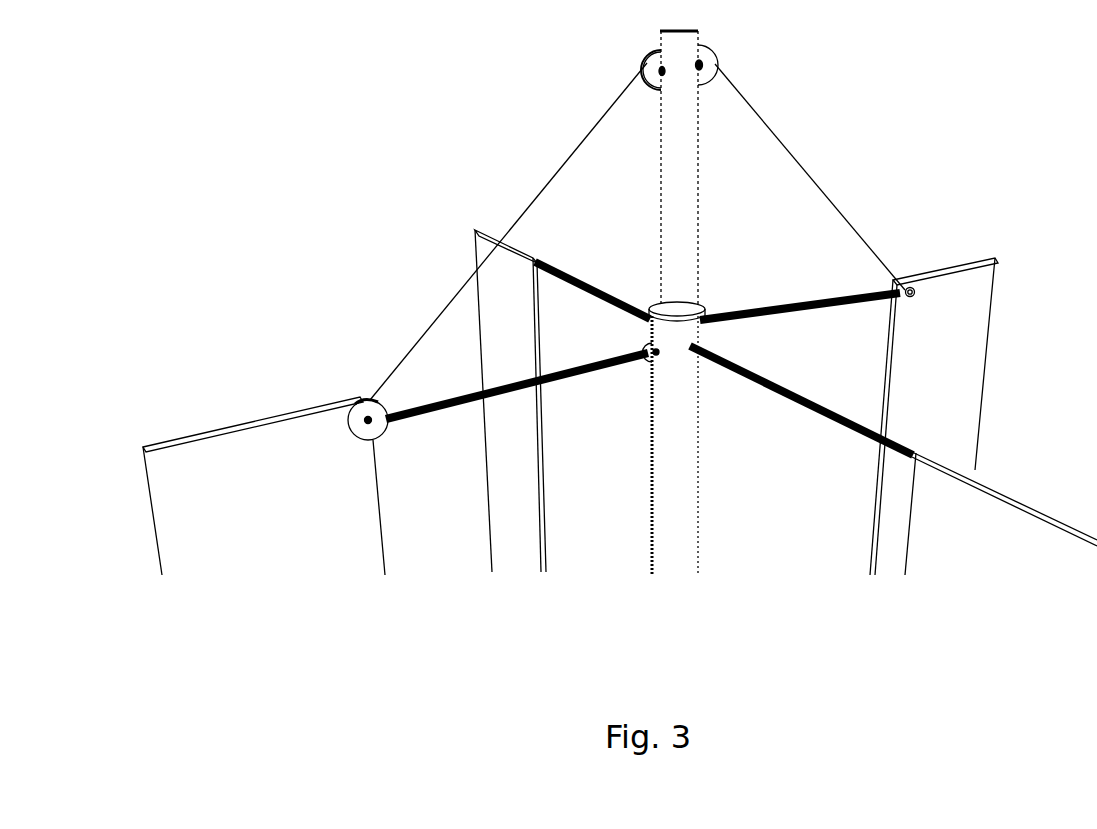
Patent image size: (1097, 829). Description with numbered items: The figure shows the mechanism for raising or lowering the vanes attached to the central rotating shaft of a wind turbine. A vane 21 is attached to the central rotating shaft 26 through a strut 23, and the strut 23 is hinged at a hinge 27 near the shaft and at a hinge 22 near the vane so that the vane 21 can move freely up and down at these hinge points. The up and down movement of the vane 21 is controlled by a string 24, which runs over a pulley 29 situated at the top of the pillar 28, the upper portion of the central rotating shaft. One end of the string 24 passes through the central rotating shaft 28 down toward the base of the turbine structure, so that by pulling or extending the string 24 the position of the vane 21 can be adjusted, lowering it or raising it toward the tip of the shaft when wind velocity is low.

The vane 21 is at (205, 448).
The hinge 22 is at (348, 393).
The strut 23 is at (447, 388).
The string 24 is at (573, 138).
The central rotating shaft 26 is at (705, 532).
The hinge 27 is at (647, 368).
The central rotating shaft 28 is at (705, 197).
The pulley 29 is at (643, 58).